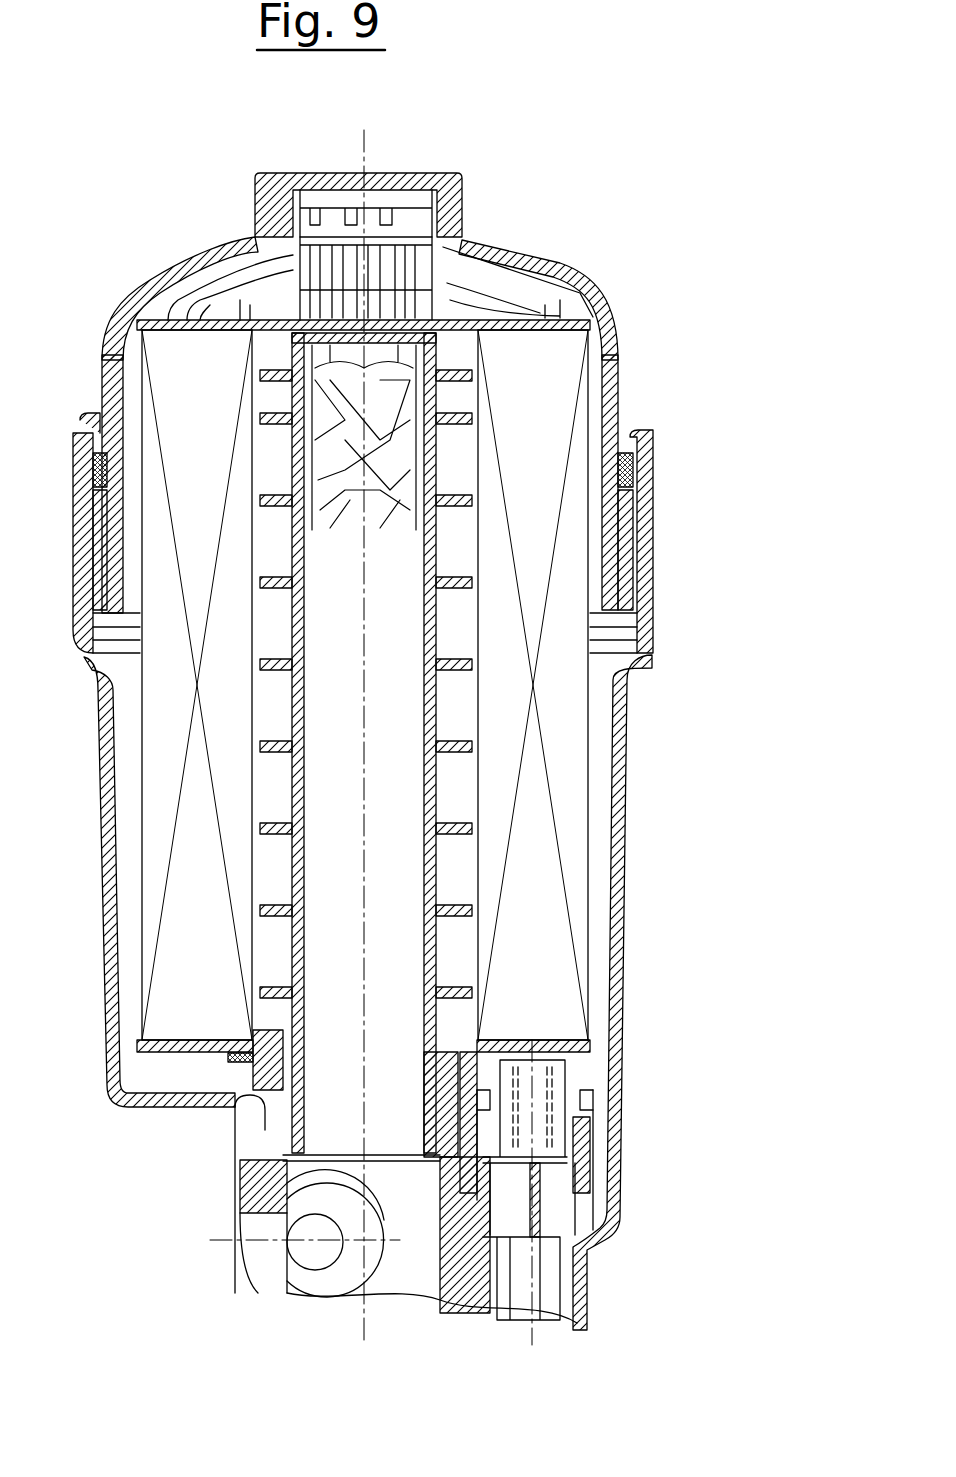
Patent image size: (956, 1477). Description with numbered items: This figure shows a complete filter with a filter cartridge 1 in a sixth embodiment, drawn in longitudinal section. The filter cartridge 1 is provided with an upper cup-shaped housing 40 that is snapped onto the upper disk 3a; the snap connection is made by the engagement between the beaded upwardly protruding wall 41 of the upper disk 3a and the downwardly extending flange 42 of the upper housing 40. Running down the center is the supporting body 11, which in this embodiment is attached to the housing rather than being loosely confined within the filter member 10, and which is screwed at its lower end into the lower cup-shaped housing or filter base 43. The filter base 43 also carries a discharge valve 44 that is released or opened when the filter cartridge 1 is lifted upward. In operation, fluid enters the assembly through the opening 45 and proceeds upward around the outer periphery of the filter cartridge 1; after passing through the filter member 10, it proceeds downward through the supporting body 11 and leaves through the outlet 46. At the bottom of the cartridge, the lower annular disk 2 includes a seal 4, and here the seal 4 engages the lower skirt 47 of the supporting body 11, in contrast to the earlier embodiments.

The filter cartridge 1 is at (597, 703).
The lower annular disk 2 is at (173, 1037).
The upper disk 3a is at (172, 305).
The seal 4 is at (227, 1062).
The filter member 10 is at (560, 393).
The supporting body 11 is at (437, 783).
The upper cup-shaped housing 40 is at (573, 268).
The beaded upwardly protruding wall 41 is at (463, 240).
The downwardly extending flange 42 is at (460, 267).
The lower cup-shaped housing 43 is at (628, 891).
The discharge valve 44 is at (597, 1213).
The opening 45 is at (250, 1258).
The outlet 46 is at (402, 1277).
The lower skirt 47 is at (257, 1073).